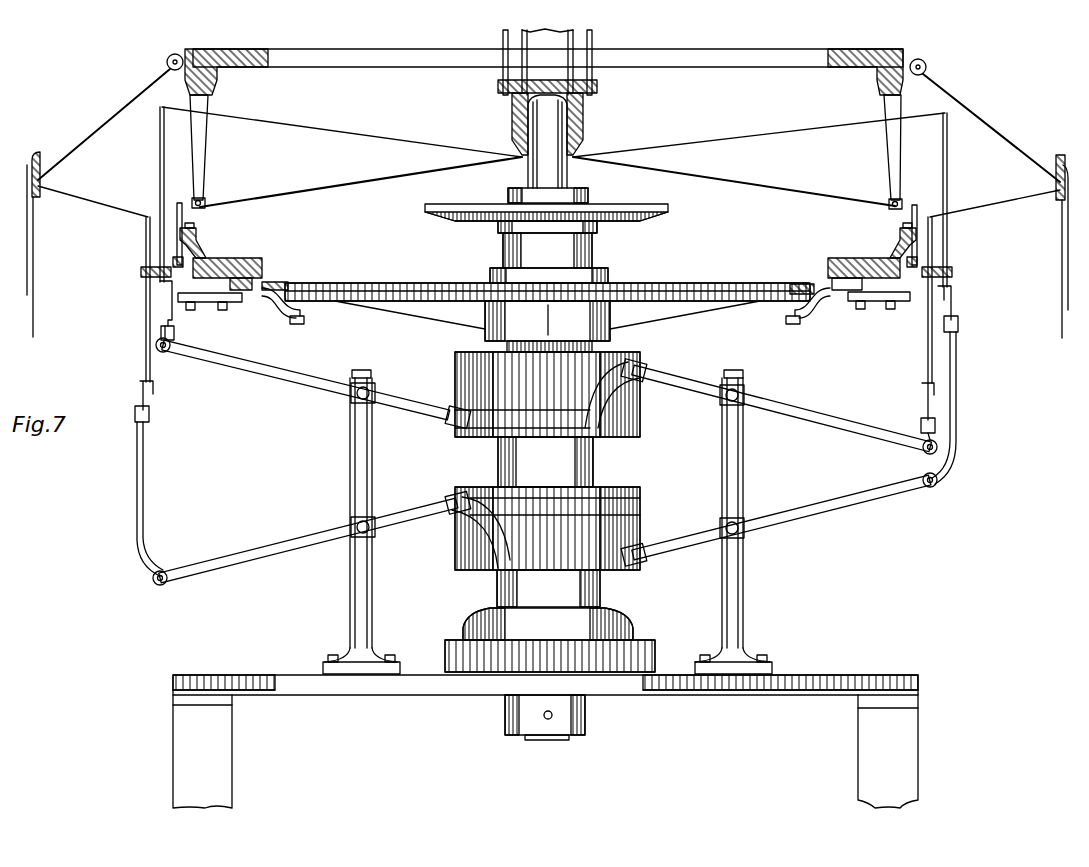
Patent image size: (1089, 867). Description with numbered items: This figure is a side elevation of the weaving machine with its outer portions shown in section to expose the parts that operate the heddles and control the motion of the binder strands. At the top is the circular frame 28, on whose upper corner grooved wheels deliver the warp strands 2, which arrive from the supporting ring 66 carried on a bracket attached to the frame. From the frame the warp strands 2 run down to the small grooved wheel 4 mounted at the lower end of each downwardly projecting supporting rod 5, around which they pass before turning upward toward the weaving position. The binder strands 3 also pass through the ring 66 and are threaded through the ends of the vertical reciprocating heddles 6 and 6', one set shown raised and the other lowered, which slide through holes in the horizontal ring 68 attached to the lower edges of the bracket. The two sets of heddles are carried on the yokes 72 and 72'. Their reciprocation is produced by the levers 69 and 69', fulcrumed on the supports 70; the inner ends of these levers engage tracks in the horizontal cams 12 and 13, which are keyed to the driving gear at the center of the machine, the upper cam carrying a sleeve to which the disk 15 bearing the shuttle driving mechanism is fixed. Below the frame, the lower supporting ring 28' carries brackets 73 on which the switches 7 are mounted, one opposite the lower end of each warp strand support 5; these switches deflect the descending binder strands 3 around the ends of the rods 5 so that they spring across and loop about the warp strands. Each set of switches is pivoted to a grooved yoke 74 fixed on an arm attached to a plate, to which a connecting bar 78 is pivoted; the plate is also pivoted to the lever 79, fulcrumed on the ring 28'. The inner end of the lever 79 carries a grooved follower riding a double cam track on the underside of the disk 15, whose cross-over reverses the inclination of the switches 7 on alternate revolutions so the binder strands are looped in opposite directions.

The circular frame 28 is at (546, 58).
The warp strands 2 is at (114, 104).
The binder strands 3 is at (820, 129).
The supporting ring 66 is at (36, 150).
The supporting rods 5 is at (205, 137).
The small grooved wheel 4 is at (206, 199).
The heddles 6 is at (537, 245).
The heddles 6' is at (546, 247).
The switches 7 is at (184, 220).
The brackets 73 is at (198, 248).
The grooved yoke 74 is at (172, 262).
The lower supporting ring 28' is at (546, 256).
The horizontal ring 68 is at (141, 273).
The yoke 72 is at (518, 360).
The yoke 72' is at (549, 430).
The connecting bar 78 is at (212, 306).
The lever 79 is at (263, 312).
The disk 15 is at (336, 302).
The cam 13 is at (456, 362).
The cam 12 is at (640, 499).
The levers 69 is at (546, 396).
The levers 69' is at (545, 526).
The supports 70 is at (373, 453).